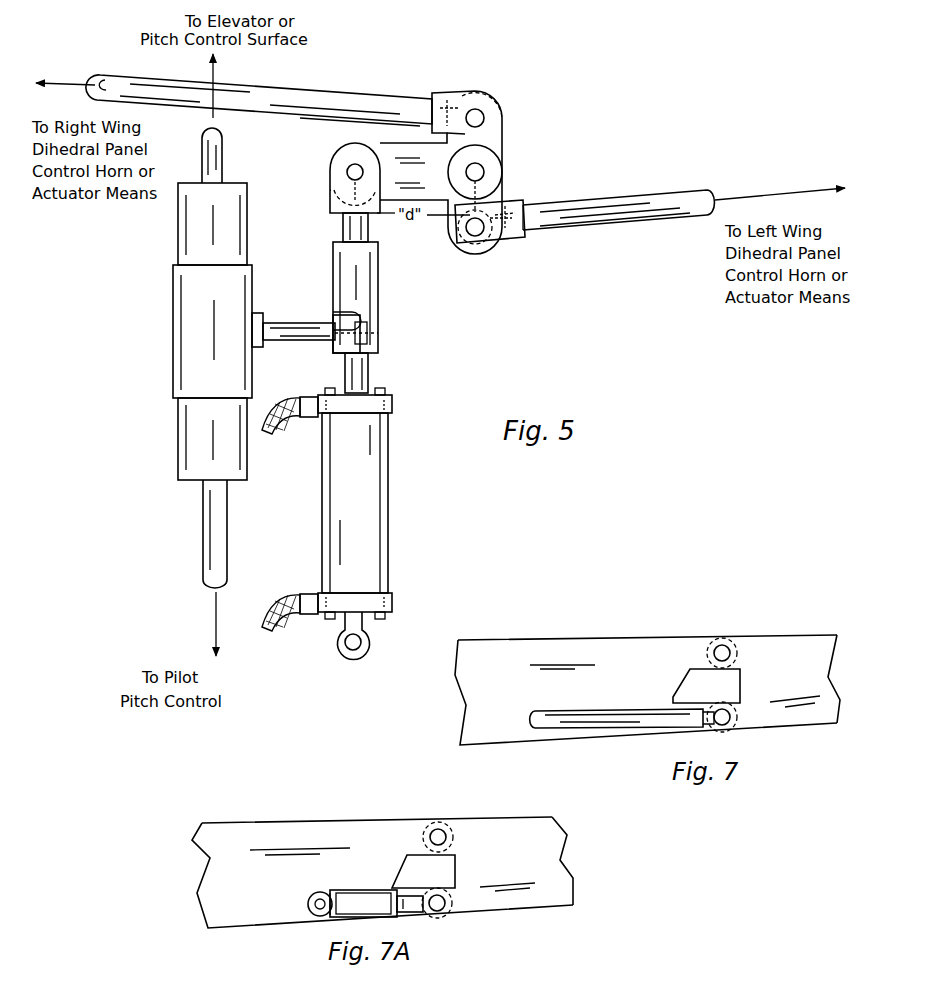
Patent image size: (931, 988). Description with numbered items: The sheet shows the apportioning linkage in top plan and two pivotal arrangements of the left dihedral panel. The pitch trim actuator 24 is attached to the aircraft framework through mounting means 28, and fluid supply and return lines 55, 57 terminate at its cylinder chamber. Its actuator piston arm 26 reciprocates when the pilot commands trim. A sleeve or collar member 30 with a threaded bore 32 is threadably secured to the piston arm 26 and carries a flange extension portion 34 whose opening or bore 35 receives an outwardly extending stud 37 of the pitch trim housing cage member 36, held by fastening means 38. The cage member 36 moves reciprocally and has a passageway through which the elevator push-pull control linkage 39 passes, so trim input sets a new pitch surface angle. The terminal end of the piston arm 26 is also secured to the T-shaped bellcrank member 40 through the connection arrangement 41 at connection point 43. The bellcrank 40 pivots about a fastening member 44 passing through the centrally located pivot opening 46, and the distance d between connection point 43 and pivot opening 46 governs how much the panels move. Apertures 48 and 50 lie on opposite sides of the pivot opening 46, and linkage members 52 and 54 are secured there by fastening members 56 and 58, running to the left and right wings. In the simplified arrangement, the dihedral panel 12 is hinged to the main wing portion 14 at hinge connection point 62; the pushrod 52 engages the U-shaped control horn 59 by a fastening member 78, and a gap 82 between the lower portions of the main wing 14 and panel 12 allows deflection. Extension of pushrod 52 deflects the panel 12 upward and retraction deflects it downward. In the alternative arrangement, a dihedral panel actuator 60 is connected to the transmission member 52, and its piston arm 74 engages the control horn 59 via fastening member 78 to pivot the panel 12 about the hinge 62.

In FIG. 7, the dihedral panel 12 is at (812, 722).
In FIG. 7A, the dihedral panel 12 is at (532, 866).
In FIG. 7, the main wing portion 14 is at (558, 648).
In FIG. 7A, the main wing portion 14 is at (283, 835).
In FIG. 5, the pitch trim actuator 24 is at (389, 505).
In FIG. 5, the actuator piston arm 26 is at (341, 230).
In FIG. 5, the mounting means 28 is at (373, 641).
In FIG. 5, the sleeve or collar member 30 is at (382, 296).
In FIG. 5, the threaded bore 32 is at (376, 366).
In FIG. 5, the flange extension portion 34 is at (340, 300).
In FIG. 5, the opening or bore 35 is at (372, 384).
In FIG. 5, the pitch trim housing cage member 36 is at (173, 325).
In FIG. 5, the stud 37 is at (303, 341).
In FIG. 5, the fastening means 38 is at (380, 333).
In FIG. 5, the elevator push-pull control linkage 39 is at (224, 143).
In FIG. 5, the bellcrank member 40 is at (390, 138).
In FIG. 5, the connection arrangement 41 is at (326, 188).
In FIG. 5, the connection point 43 is at (352, 168).
In FIG. 5, the fastening member 44 is at (482, 176).
In FIG. 5, the pivot opening 46 is at (495, 160).
In FIG. 5, the aperture 48 is at (495, 238).
In FIG. 5, the aperture 50 is at (505, 108).
In FIG. 5, the linkage member or pushrod 52 is at (643, 229).
In FIG. 7, the linkage member or pushrod 52 is at (608, 722).
In FIG. 5, the linkage member 54 is at (330, 95).
In FIG. 5, the fluid supply and return line 55 is at (288, 630).
In FIG. 5, the fastening member 56 is at (477, 110).
In FIG. 5, the fluid supply and return line 57 is at (288, 420).
In FIG. 5, the fastening member 58 is at (468, 238).
In FIG. 7, the control horn 59 is at (712, 727).
In FIG. 7A, the control horn 59 is at (440, 912).
In FIG. 7A, the dihedral panel actuator 60 is at (355, 890).
In FIG. 7, the hinge connection point 62 is at (742, 651).
In FIG. 7A, the hinge connection point 62 is at (457, 838).
In FIG. 7A, the piston arm 74 is at (410, 912).
In FIG. 7, the fastening member 78 is at (727, 707).
In FIG. 7A, the fastening member 78 is at (445, 903).
In FIG. 7, the gap 82 is at (697, 690).
In FIG. 7A, the gap 82 is at (420, 872).